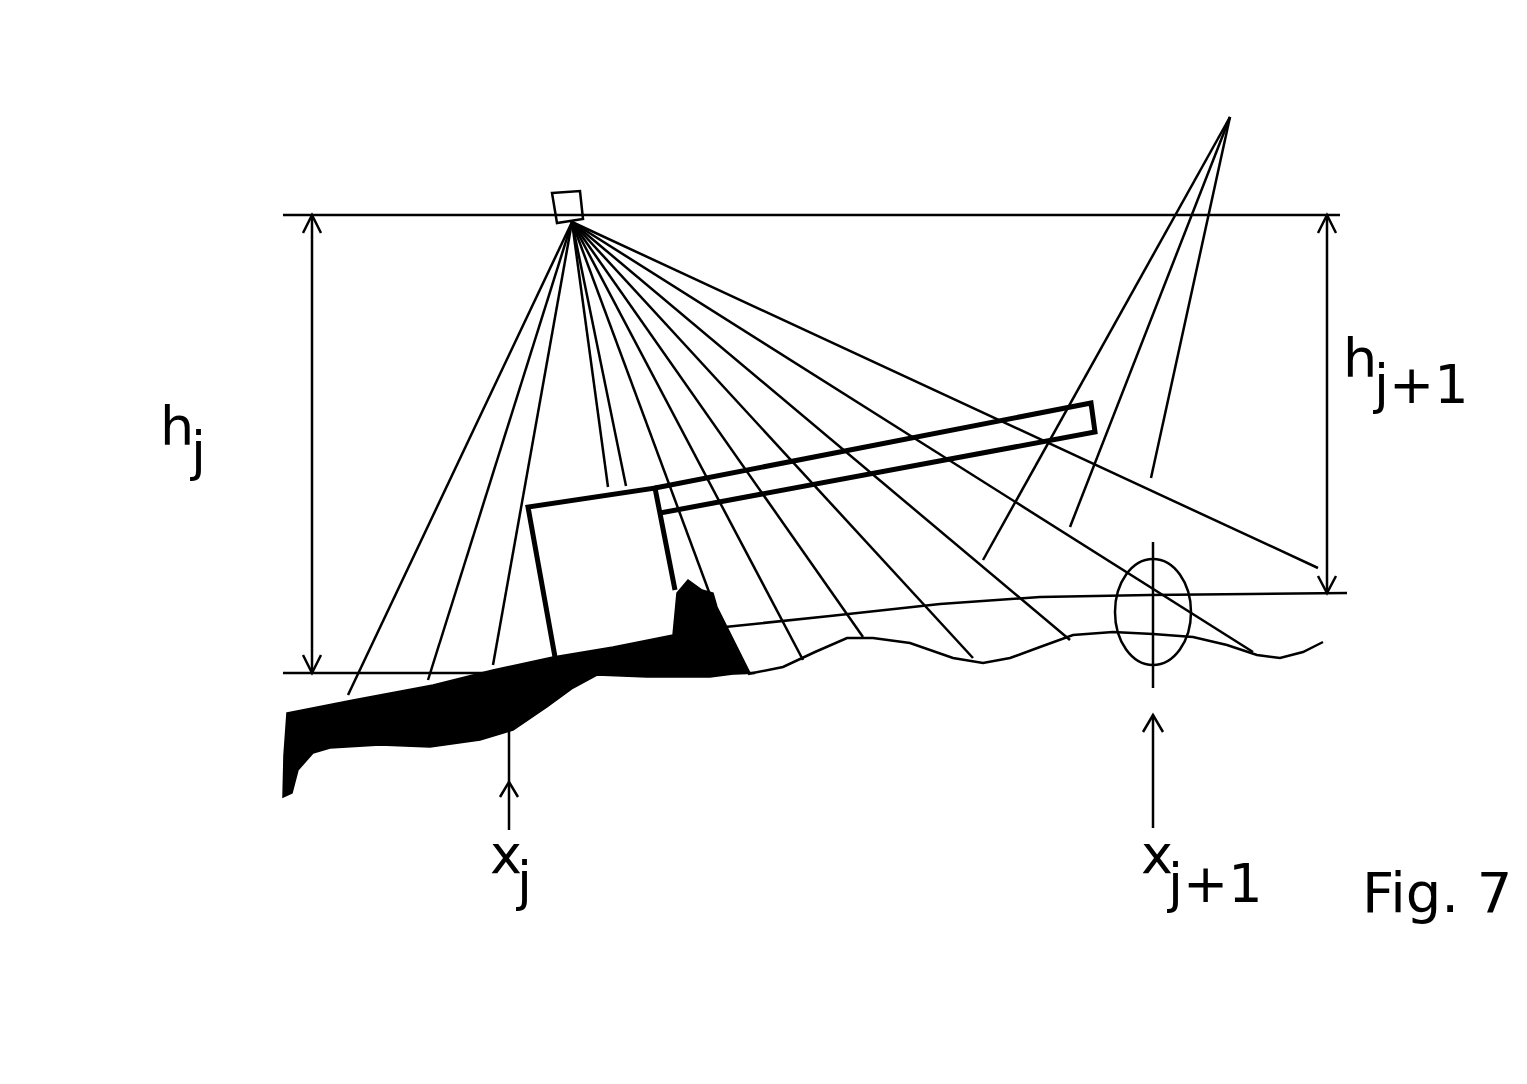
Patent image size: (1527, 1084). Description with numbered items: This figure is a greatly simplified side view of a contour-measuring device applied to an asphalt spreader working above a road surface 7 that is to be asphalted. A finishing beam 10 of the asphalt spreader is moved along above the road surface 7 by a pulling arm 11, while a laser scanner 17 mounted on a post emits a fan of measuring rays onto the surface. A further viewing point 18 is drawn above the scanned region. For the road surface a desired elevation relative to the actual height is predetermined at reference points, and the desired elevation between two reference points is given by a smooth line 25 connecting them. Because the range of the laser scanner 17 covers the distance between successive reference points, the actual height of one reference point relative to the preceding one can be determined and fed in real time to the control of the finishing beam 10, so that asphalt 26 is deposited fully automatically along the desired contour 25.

The road surface 7 is at (910, 645).
The finishing beam 10 is at (570, 592).
The pulling arm 11 is at (1028, 415).
The laser scanner 17 is at (580, 188).
The camera 18 is at (1122, 319).
The smooth line 25 is at (1345, 588).
The asphalt 26 is at (605, 674).